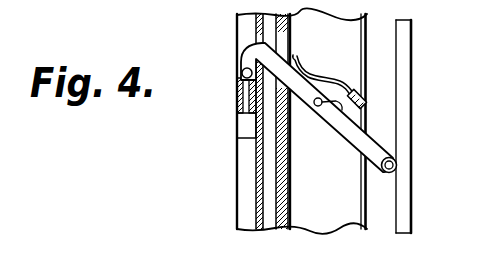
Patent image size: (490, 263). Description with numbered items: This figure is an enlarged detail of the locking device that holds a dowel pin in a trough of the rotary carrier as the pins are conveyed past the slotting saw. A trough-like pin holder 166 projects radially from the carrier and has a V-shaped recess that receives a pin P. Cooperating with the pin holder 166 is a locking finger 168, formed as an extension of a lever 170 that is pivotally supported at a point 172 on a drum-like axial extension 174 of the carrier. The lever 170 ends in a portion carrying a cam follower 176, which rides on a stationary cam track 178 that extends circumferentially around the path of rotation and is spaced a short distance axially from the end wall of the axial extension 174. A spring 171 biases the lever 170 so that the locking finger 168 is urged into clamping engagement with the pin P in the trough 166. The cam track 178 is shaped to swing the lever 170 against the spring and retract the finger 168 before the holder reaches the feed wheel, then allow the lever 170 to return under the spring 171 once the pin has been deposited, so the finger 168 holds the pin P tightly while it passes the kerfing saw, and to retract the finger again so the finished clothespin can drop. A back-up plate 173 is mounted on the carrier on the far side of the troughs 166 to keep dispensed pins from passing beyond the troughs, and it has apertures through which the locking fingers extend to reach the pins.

The pin holder 166 is at (243, 96).
The locking finger 168 is at (256, 48).
The pin P is at (241, 73).
The lever 170 is at (294, 60).
The spring 171 is at (352, 90).
The pivot point 172 is at (321, 106).
The back-up plate 173 is at (256, 220).
The axial extension 174 is at (321, 213).
The cam follower 176 is at (397, 167).
The cam track 178 is at (403, 142).